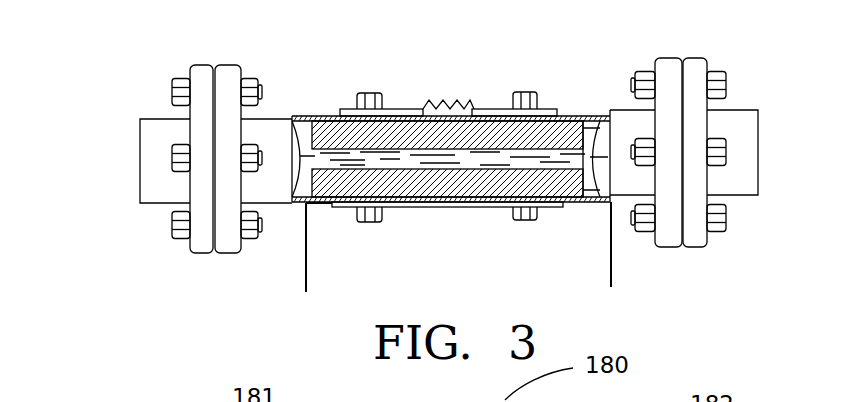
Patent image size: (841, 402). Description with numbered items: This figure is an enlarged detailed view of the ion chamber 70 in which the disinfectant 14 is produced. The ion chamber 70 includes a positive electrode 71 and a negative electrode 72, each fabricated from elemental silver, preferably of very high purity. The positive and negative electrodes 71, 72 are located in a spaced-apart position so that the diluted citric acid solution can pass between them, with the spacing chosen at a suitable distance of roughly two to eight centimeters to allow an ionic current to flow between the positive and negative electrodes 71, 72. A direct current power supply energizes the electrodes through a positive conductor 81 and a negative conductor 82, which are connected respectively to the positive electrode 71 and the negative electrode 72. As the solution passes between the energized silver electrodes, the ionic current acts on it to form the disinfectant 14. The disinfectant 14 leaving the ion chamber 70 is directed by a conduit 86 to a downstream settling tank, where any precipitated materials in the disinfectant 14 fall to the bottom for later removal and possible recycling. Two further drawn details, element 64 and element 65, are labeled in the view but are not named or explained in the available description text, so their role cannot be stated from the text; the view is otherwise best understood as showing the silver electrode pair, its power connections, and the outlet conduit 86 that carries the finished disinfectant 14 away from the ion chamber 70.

The disinfectant 14 is at (573, 110).
The first pipe 64 is at (158, 205).
The spring element 65 is at (423, 107).
The ion chamber 70 is at (593, 110).
The positive electrode 71 is at (452, 204).
The negative electrode 72 is at (315, 117).
The positive conductor 81 is at (306, 251).
The negative conductor 82 is at (613, 268).
The conduit 86 is at (740, 197).